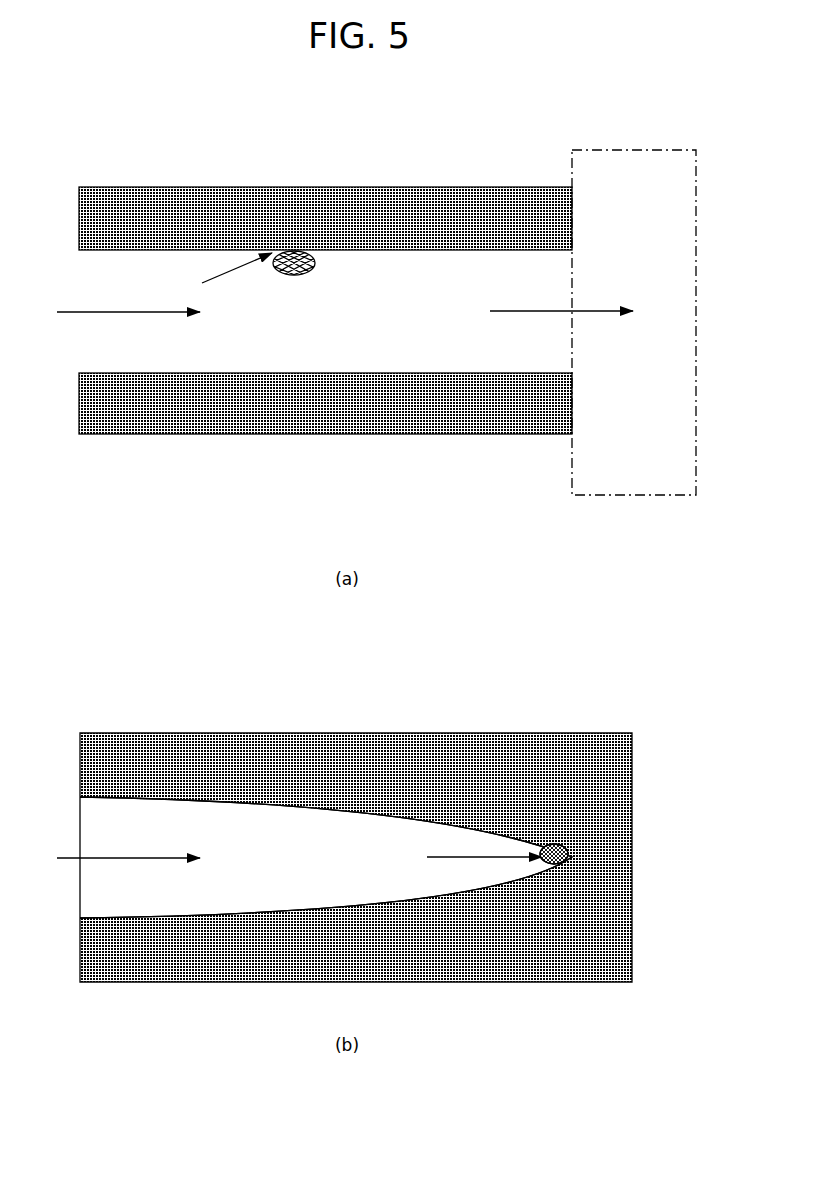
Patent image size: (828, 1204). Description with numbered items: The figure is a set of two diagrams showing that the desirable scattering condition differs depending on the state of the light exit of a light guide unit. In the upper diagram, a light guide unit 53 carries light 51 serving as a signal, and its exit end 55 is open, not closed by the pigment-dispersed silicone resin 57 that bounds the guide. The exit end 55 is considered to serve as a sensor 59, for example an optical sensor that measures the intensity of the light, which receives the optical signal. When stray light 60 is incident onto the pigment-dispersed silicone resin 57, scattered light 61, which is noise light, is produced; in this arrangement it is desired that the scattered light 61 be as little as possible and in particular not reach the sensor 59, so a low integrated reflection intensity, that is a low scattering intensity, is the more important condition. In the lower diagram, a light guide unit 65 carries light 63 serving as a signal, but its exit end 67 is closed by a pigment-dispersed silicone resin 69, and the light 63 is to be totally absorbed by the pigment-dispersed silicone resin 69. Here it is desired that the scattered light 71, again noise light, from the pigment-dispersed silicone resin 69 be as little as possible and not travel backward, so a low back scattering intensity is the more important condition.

The light 51 is at (157, 312).
The light guide unit 53 is at (310, 182).
The exit end 55 is at (568, 347).
The pigment-dispersed silicone resin 57 is at (438, 210).
The sensor 59 is at (598, 446).
The stray light 60 is at (230, 272).
The scattered light 61 is at (317, 267).
The light 63 is at (167, 858).
The light guide unit 65 is at (369, 830).
The exit end 67 is at (560, 877).
The pigment-dispersed silicone resin 69 is at (272, 775).
The scattered light 71 is at (543, 843).